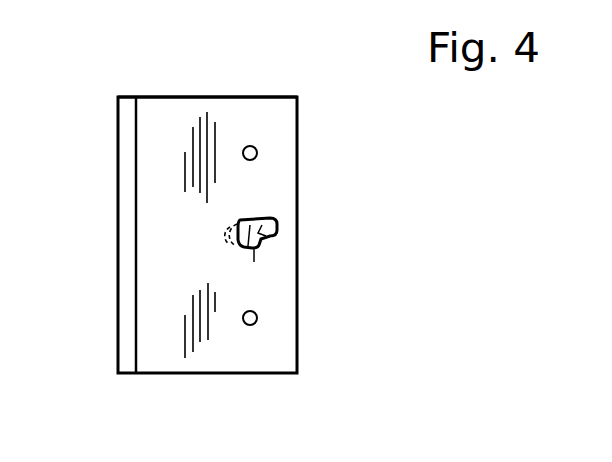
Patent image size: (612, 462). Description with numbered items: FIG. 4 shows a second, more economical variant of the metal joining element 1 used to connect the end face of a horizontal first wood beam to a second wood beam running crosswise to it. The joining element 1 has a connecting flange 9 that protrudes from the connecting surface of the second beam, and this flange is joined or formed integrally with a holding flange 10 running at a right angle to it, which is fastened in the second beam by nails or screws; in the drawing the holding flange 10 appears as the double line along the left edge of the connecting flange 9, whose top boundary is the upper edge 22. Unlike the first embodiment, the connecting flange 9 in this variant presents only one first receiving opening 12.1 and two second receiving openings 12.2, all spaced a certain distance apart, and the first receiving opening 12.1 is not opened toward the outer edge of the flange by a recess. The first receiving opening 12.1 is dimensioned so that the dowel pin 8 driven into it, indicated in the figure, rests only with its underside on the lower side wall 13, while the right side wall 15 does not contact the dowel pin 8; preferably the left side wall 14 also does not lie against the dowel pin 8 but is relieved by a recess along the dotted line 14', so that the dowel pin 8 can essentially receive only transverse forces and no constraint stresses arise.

The joining element 1 is at (303, 88).
The connecting flange 9 is at (178, 108).
The upper edge 22 is at (243, 97).
The holding flange 10 is at (127, 175).
The second receiving opening 12.2 is at (257, 151).
The dowel pin 8 is at (262, 218).
The first receiving opening 12.1 is at (277, 222).
The left side wall 14 is at (152, 226).
The dotted line 14' is at (145, 258).
The right side wall 15 is at (262, 242).
The lower side wall 13 is at (254, 247).